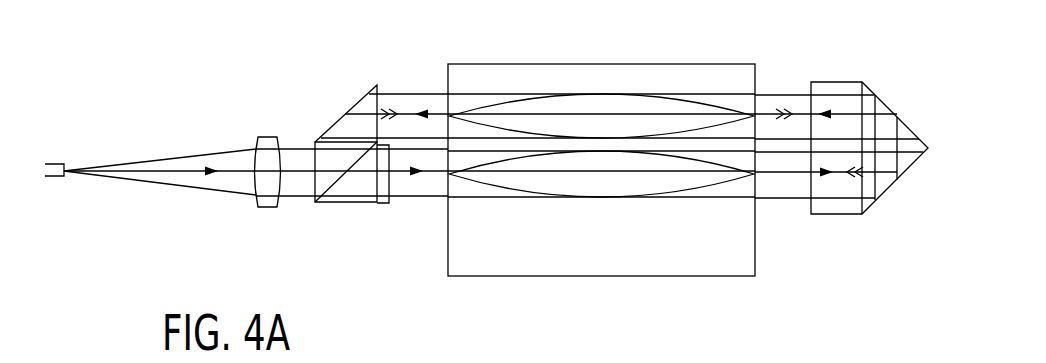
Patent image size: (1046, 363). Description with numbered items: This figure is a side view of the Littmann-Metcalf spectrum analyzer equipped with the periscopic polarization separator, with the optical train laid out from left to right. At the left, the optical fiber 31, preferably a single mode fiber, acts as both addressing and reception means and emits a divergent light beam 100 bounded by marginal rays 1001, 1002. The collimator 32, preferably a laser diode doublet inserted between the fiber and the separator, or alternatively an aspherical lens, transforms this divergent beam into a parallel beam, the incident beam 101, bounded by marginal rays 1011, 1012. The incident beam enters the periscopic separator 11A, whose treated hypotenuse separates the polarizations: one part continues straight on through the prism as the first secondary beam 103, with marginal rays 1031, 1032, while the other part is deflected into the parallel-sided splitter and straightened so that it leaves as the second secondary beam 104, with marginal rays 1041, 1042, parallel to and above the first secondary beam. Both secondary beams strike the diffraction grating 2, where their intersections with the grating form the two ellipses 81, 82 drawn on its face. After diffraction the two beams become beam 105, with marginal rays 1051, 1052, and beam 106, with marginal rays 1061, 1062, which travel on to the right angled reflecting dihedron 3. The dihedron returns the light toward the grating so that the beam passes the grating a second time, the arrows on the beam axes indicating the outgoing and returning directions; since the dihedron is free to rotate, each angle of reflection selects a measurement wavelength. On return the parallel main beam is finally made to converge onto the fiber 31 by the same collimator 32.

The optical fiber 31 is at (57, 163).
The divergent light beam 100 is at (157, 161).
The marginal ray of divergent beam 1001 is at (203, 156).
The marginal ray of divergent beam 1002 is at (181, 190).
The collimator 32 is at (260, 137).
The incident beam 101 is at (290, 167).
The marginal ray of incident beam 1011 is at (312, 147).
The marginal ray of incident beam 1012 is at (290, 199).
The periscopic separator 11A is at (352, 100).
The second secondary beam 104 is at (404, 111).
The marginal ray of second secondary beam 1041 is at (422, 93).
The marginal ray of second secondary beam 1042 is at (438, 137).
The first secondary beam 103 is at (433, 173).
The marginal ray of first secondary beam 1031 is at (403, 153).
The marginal ray of first secondary beam 1032 is at (430, 198).
The diffraction grating 2 is at (617, 63).
The ellipse 81 is at (572, 105).
The ellipse 82 is at (603, 183).
The diffracted beam 106 is at (773, 112).
The marginal ray of beam 106 1061 is at (798, 95).
The marginal ray of beam 106 1062 is at (795, 140).
The diffracted beam 105 is at (768, 178).
The marginal ray of beam 105 1051 is at (782, 154).
The marginal ray of beam 105 1052 is at (802, 200).
The right angled reflecting dihedron 3 is at (893, 103).